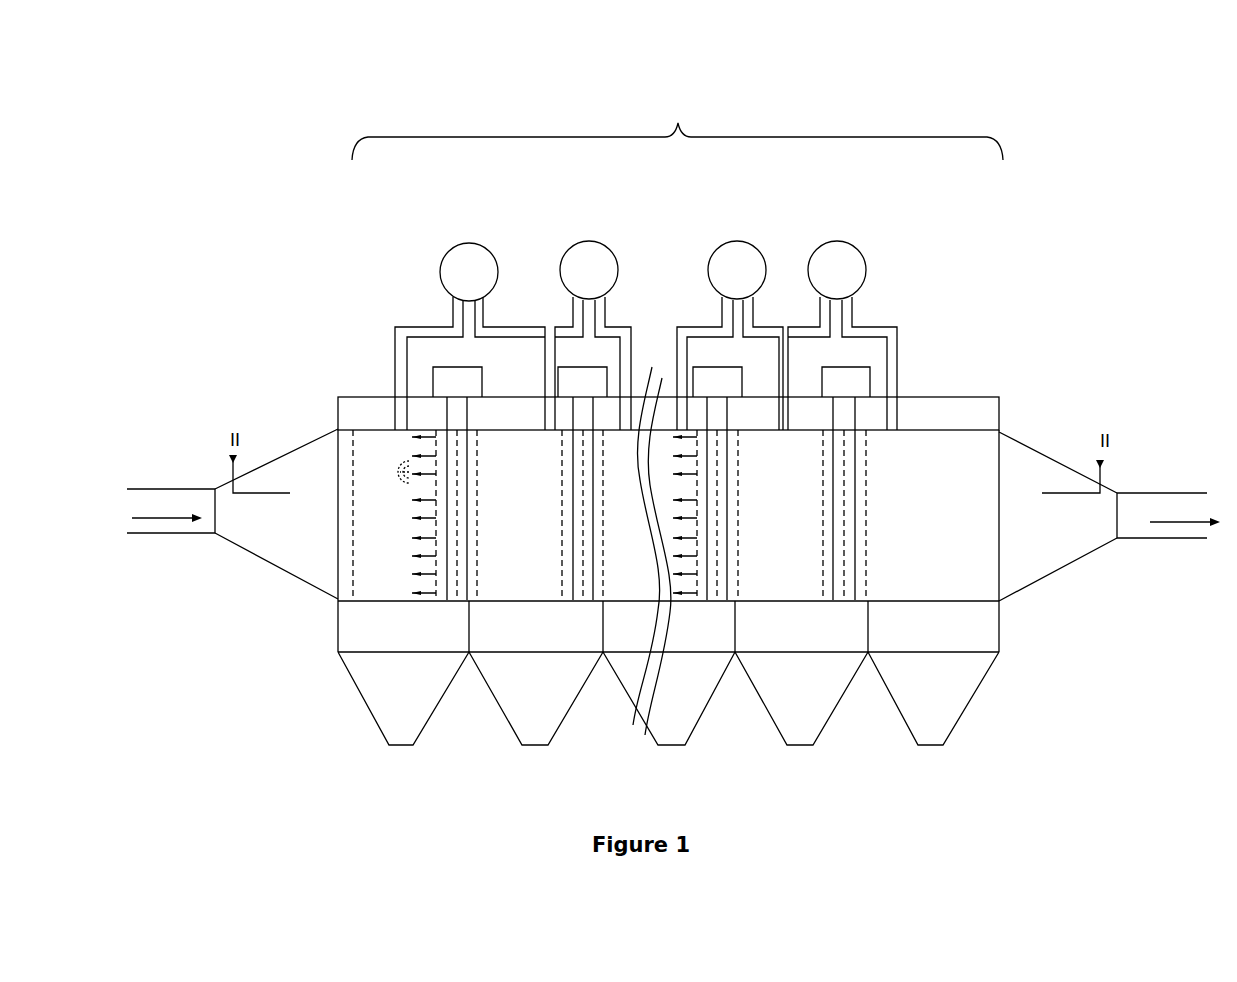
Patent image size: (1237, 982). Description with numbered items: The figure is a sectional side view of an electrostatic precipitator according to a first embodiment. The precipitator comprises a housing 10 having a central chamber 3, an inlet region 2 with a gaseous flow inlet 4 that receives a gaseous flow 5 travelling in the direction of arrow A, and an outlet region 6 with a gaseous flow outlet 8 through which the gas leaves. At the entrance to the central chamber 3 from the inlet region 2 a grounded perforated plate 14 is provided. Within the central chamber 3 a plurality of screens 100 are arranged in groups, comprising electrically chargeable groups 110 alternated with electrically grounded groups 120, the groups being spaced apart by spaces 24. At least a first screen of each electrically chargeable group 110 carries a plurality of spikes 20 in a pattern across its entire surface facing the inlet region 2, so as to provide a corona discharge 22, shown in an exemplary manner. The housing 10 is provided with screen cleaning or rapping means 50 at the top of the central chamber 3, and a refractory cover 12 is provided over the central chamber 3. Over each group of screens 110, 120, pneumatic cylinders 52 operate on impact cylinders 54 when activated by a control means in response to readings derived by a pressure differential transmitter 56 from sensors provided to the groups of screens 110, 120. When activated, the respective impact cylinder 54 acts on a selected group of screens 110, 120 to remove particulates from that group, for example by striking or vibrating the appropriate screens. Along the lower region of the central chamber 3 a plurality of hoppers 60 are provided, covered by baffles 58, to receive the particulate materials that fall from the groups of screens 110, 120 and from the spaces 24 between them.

The inlet region 2 is at (276, 514).
The central chamber 3 is at (783, 458).
The gaseous flow inlet 4 is at (180, 488).
The gaseous flow 5 is at (156, 513).
The outlet region 6 is at (1109, 516).
The gaseous flow outlet 8 is at (1137, 538).
The housing 10 is at (272, 422).
The refractory cover 12 is at (935, 410).
The grounded perforated plate 14 is at (353, 558).
The spikes 20 is at (418, 573).
The corona discharge 22 is at (397, 468).
The spaces 24 is at (510, 555).
The screen cleaning or rapping means 50 is at (677, 130).
The pneumatic cylinders 52 is at (848, 382).
The impact cylinders 54 is at (845, 415).
The pressure differential transmitter 56 is at (442, 261).
The baffles 58 is at (948, 633).
The hoppers 60 is at (948, 700).
The screens 100 is at (583, 460).
The electrically chargeable groups 110 is at (457, 585).
The electrically grounded groups 120 is at (832, 565).